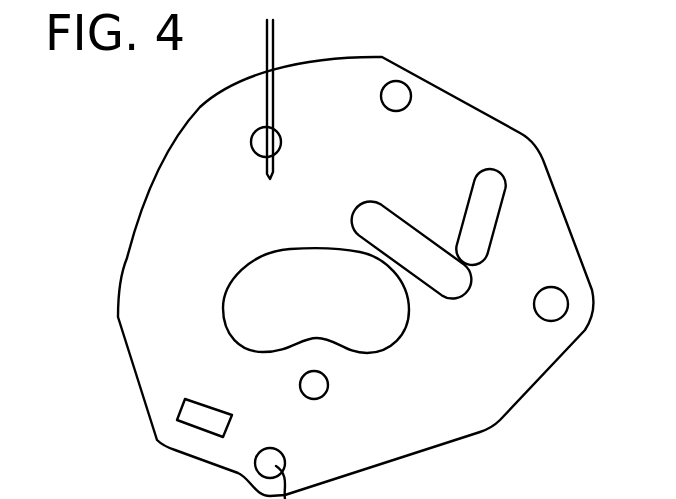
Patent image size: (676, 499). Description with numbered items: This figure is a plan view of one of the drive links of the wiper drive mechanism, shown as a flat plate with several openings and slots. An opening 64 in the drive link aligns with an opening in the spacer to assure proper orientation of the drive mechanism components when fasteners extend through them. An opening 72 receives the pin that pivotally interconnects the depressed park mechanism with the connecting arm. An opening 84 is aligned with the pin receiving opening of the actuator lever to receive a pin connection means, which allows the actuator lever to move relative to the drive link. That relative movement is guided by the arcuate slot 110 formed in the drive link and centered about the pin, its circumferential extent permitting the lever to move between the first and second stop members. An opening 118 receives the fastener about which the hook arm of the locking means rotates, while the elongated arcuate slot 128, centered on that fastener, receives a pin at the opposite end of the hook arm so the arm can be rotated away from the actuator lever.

The opening 64 is at (402, 88).
The opening 72 is at (568, 293).
The opening 84 is at (320, 392).
The arcuate slot 110 is at (260, 270).
The opening 118 is at (278, 131).
The elongated arcuate slot 128 is at (502, 178).